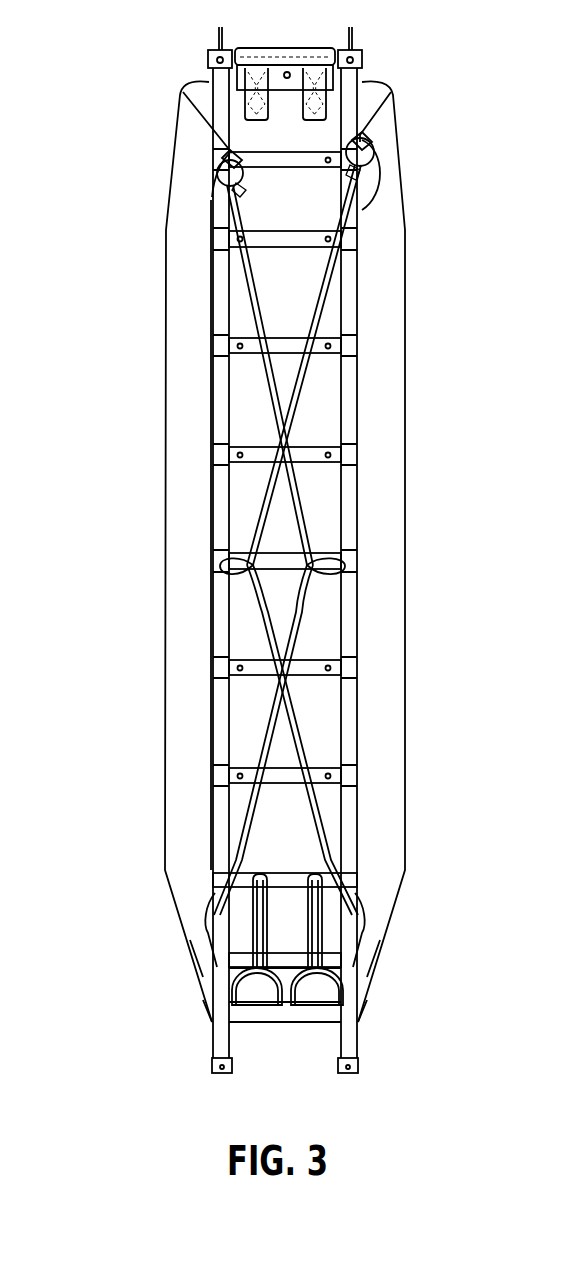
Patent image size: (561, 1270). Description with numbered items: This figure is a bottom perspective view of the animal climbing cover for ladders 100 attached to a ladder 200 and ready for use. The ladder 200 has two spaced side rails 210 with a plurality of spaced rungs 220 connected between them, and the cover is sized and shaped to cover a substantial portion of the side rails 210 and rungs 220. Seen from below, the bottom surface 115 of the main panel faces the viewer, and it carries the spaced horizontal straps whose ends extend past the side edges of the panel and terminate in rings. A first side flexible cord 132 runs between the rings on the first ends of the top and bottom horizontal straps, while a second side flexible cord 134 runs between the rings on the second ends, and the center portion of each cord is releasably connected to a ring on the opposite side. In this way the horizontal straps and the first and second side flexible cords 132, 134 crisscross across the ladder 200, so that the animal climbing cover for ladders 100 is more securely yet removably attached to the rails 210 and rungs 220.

The animal climbing cover for ladders 100 is at (383, 119).
The bottom surface 115 is at (240, 438).
The first side flexible cord 132 is at (215, 250).
The second side flexible cord 134 is at (343, 272).
The ladder 200 is at (244, 561).
The side rails 210 is at (348, 375).
The rungs 220 is at (330, 447).